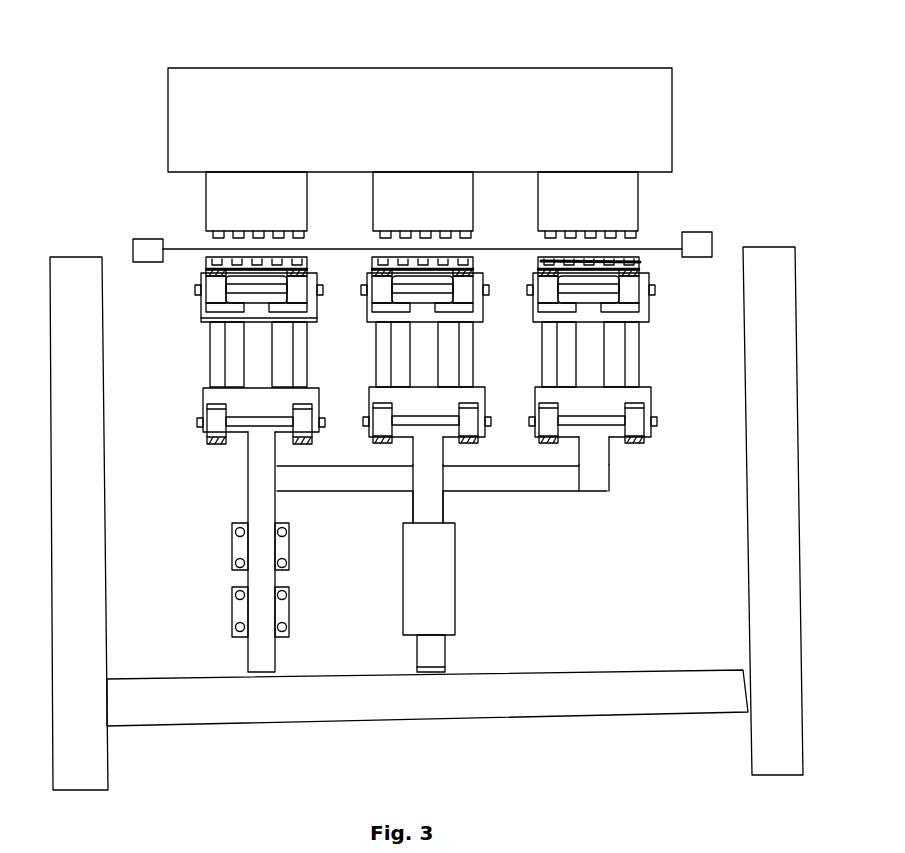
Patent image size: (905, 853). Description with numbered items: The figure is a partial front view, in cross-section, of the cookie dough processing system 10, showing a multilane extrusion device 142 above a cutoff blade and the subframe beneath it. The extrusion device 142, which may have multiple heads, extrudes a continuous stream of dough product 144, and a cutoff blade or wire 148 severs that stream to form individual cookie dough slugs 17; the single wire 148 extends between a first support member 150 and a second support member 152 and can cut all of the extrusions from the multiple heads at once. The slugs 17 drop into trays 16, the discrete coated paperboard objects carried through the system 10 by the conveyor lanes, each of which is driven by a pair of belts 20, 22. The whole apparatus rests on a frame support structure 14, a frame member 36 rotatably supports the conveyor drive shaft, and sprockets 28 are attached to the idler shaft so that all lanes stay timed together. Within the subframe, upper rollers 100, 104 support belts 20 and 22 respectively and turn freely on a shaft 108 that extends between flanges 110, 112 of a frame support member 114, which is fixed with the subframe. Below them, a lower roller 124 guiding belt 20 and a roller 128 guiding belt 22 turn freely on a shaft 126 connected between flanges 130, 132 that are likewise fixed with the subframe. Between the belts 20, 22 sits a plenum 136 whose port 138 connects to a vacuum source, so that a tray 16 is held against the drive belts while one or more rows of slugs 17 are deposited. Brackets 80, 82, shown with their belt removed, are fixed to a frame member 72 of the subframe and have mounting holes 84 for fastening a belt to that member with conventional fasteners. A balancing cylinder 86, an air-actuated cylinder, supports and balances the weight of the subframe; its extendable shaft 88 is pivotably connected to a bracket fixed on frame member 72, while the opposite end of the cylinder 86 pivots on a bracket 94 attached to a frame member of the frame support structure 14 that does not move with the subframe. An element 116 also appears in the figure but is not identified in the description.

The processing system 10 is at (699, 47).
The frame support structure 14 is at (785, 258).
The tray 16 is at (308, 266).
The cookie dough slug 17 is at (636, 261).
The belt 20 is at (207, 268).
The belt 22 is at (298, 260).
The sprockets 28 is at (306, 354).
The frame member 36 is at (107, 760).
The frame member 72 is at (275, 665).
The bracket 80 is at (290, 548).
The bracket 82 is at (242, 610).
The mounting holes 84 is at (236, 563).
The balancing cylinder 86 is at (445, 610).
The extendable shaft 88 is at (435, 503).
The bracket 94 is at (441, 673).
The upper roller 100 is at (212, 290).
The upper roller 104 is at (296, 282).
The shaft 108 is at (290, 310).
The flange 110 is at (272, 295).
The flange 112 is at (232, 304).
The frame support member 114 is at (256, 312).
The pins 116 is at (196, 292).
The lower roller 124 is at (213, 441).
The shaft 126 is at (284, 402).
The roller 128 is at (310, 437).
The flange 130 is at (208, 410).
The flange 132 is at (314, 394).
The plenum 136 is at (252, 302).
The port 138 is at (250, 322).
The extrusion device 142 is at (668, 137).
The dough product 144 is at (236, 232).
The cutoff blade or wire 148 is at (650, 247).
The first support member 150 is at (136, 247).
The second support member 152 is at (700, 244).